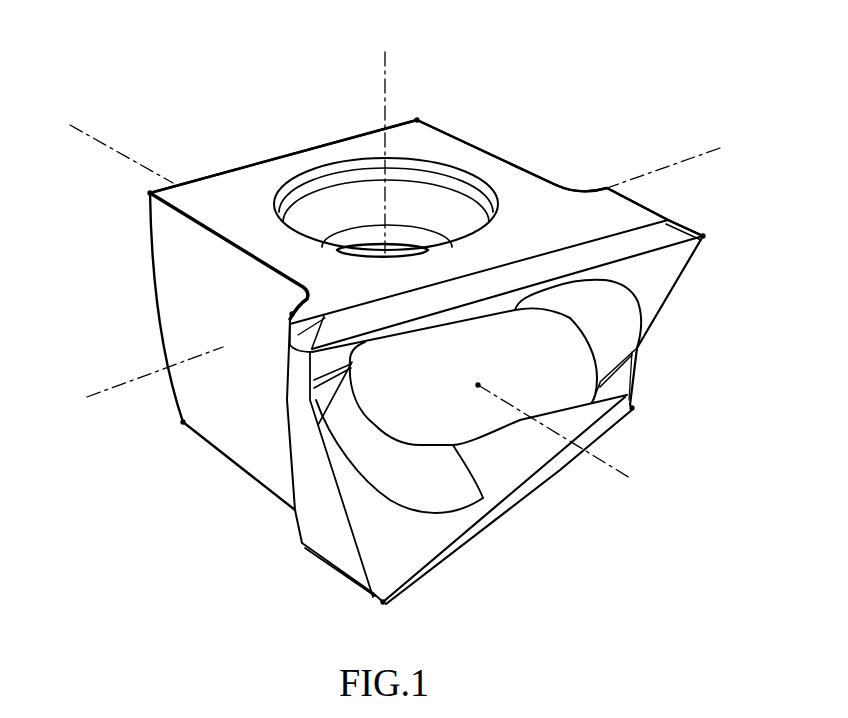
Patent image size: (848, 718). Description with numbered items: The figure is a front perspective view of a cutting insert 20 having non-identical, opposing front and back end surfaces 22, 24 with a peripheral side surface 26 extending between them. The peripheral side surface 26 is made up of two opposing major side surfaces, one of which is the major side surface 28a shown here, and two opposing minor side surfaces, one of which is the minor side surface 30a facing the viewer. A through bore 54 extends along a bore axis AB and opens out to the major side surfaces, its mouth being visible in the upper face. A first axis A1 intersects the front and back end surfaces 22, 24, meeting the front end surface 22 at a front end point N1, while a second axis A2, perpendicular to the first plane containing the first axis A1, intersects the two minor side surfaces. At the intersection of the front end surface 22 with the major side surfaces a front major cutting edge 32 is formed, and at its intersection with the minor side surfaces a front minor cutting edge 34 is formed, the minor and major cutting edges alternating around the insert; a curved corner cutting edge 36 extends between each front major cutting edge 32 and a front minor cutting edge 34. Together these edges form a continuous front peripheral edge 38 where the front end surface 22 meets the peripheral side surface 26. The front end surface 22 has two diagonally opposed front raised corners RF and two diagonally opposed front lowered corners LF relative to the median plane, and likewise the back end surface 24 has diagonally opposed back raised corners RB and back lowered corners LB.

The cutting insert 20 is at (300, 103).
The front end surface 22 is at (517, 472).
The back end surface 24 is at (248, 138).
The peripheral side surface 26 is at (527, 182).
The major side surface 28a is at (546, 192).
The minor side surface 30a is at (170, 314).
The front major cutting edge 32 is at (627, 255).
The front minor cutting edge 34 is at (663, 315).
The curved corner cutting edge 36 is at (705, 238).
The continuous front peripheral edge 38 is at (495, 550).
The through bore 54 is at (430, 184).
The first axis A1 is at (349, 302).
The second axis A2 is at (402, 270).
The bore axis AB is at (387, 136).
The front end point N1 is at (478, 385).
The back lowered corner LB is at (417, 120).
The front lowered corner LF is at (632, 408).
The back raised corner RB is at (150, 193).
The front raised corner RF is at (703, 236).